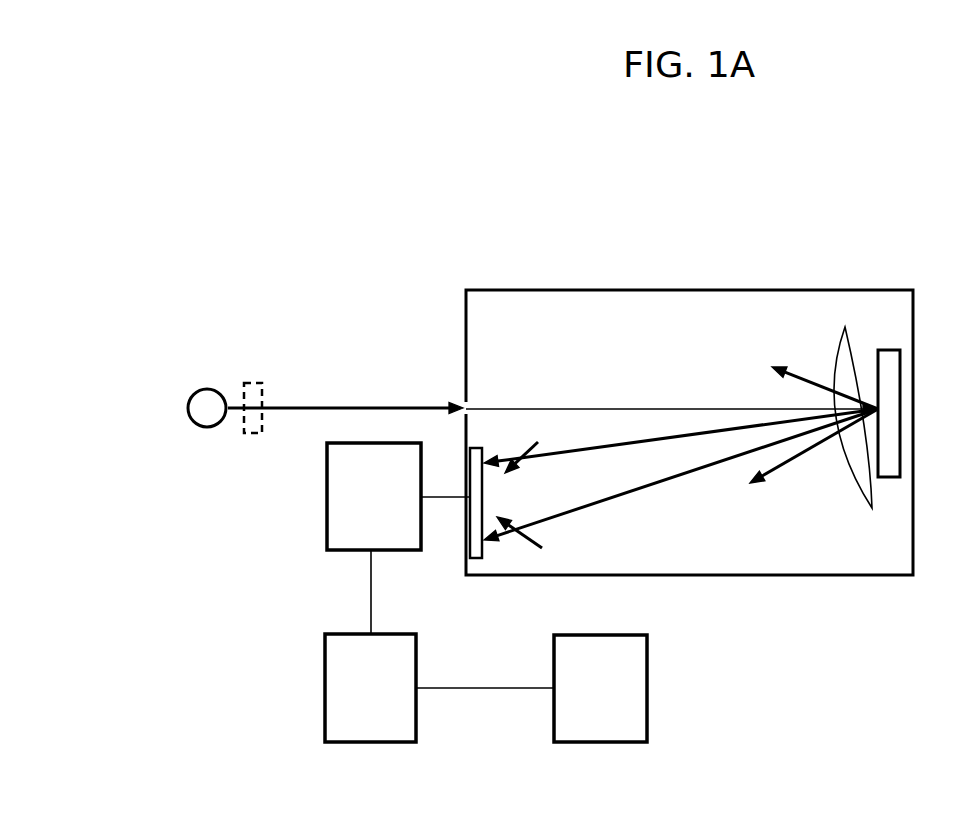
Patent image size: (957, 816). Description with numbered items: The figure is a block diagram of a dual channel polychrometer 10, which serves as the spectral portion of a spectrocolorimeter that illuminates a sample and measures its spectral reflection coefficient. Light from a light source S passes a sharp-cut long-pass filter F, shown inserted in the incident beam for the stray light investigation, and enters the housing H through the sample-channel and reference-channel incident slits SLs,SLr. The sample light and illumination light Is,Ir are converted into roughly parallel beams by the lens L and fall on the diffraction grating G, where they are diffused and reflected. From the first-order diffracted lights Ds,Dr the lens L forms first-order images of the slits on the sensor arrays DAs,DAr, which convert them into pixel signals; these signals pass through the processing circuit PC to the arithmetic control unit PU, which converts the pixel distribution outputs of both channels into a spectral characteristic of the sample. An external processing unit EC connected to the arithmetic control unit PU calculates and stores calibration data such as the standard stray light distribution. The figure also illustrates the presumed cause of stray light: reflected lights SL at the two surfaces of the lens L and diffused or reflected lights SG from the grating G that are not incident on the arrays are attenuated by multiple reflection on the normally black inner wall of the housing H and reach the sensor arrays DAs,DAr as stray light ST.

The dual channel polychrometer 10 is at (519, 204).
The housing H is at (685, 290).
The light source S is at (195, 393).
The sharp-cut long-pass filter F is at (258, 384).
The S-channel and R-channel incident slits SLs,SLr is at (462, 407).
The sample light and illumination light Is,Ir is at (593, 408).
The lens L is at (842, 414).
The diffraction grating G is at (889, 393).
The diffused/reflected light of the diffraction grating SG is at (810, 377).
The reflected light on the lens surfaces SL is at (810, 461).
The stray light ST is at (535, 489).
The first-order diffracted lights Ds,Dr is at (652, 443).
The S-channel and R-channel sensor arrays DAs,DAr is at (531, 503).
The processing circuit PC is at (398, 496).
The arithmetic control unit PU is at (370, 646).
The external processing unit EC is at (531, 688).